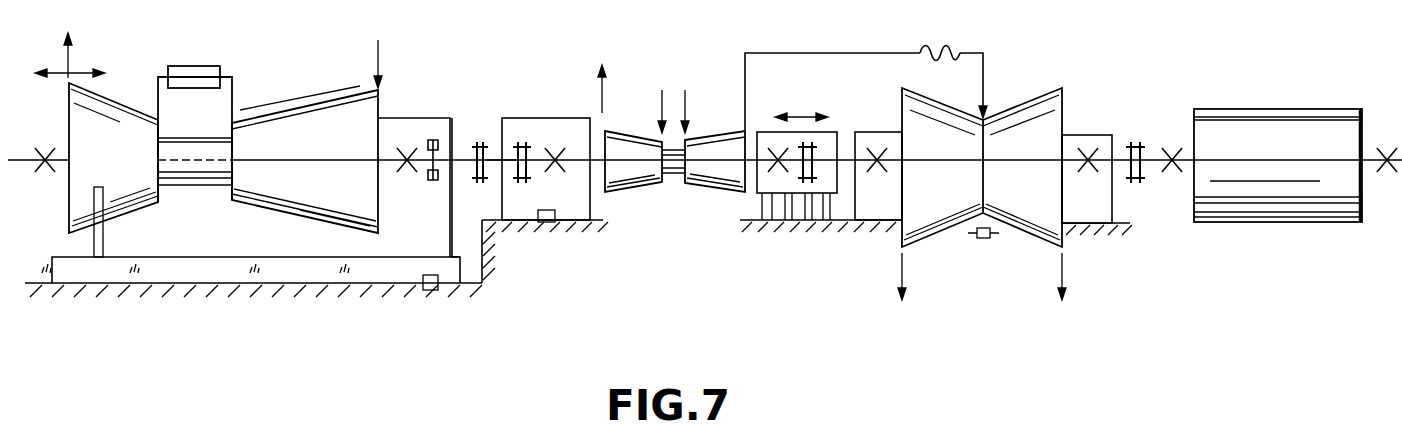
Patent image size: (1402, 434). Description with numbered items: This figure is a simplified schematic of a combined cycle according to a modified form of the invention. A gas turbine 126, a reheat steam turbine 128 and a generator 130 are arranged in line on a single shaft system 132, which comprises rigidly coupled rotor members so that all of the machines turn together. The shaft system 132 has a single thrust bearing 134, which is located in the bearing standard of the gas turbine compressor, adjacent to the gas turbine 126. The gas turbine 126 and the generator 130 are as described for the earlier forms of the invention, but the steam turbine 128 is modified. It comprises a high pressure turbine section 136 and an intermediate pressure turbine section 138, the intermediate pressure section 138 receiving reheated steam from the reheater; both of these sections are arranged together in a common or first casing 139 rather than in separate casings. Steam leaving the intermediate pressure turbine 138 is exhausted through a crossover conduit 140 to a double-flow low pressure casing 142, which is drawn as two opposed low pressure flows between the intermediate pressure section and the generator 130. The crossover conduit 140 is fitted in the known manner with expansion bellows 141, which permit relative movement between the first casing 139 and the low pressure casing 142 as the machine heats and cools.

The gas turbine 126 is at (490, 313).
The reheat steam turbine 128 is at (824, 204).
The generator 130 is at (1378, 322).
The single shaft system 132 is at (494, 158).
The single thrust bearing 134 is at (433, 148).
The high pressure turbine section 136 is at (630, 135).
The intermediate pressure turbine section 138 is at (708, 137).
The first casing 139 is at (687, 195).
The crossover conduit 140 is at (868, 36).
The expansion bellows 141 is at (972, 36).
The double-flow low pressure casing 142 is at (1017, 100).